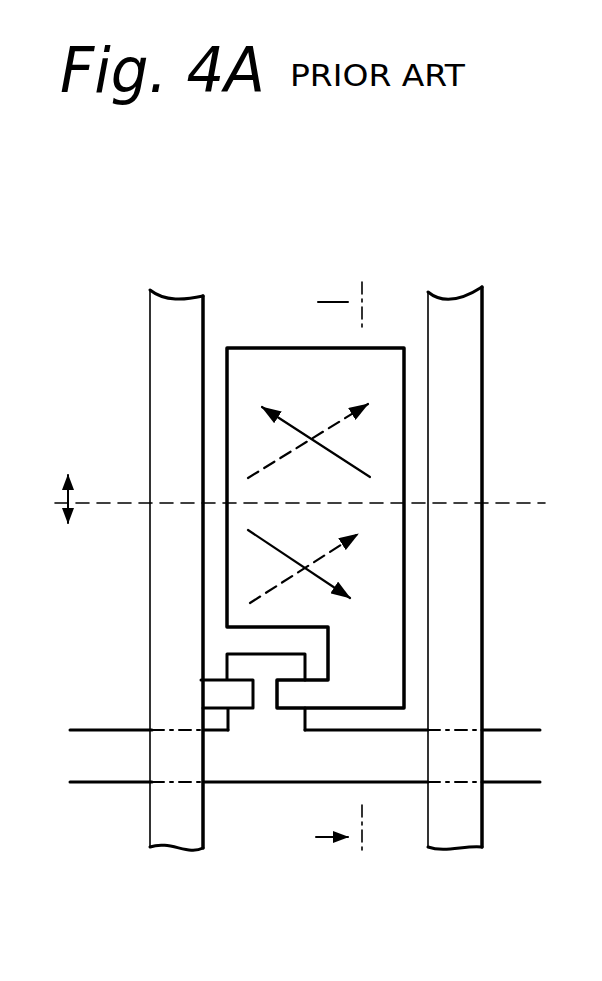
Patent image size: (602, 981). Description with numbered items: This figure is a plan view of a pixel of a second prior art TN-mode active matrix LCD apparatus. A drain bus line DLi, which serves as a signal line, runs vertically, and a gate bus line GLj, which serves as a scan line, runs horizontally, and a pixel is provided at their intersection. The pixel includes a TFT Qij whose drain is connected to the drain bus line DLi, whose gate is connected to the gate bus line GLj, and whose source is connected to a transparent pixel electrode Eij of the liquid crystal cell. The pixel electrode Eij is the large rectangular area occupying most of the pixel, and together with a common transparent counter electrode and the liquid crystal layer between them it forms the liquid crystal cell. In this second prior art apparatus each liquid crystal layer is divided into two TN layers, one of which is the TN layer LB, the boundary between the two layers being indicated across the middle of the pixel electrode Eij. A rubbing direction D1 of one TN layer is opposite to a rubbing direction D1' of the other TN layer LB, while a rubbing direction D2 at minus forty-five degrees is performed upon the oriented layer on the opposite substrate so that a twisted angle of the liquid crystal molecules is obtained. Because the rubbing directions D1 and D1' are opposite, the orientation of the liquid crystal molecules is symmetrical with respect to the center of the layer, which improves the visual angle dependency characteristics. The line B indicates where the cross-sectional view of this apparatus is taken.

The drain bus line DLi is at (168, 318).
The gate bus line GLj is at (95, 752).
The transparent pixel electrode Eij is at (405, 384).
The TFT Qij is at (267, 707).
The rubbing direction of TN layer LA D1 is at (398, 572).
The rubbing direction of TN layer LB D1' is at (406, 442).
The rubbing direction D2 is at (328, 558).
The TN layer LB is at (300, 470).
The line B— B is at (323, 568).